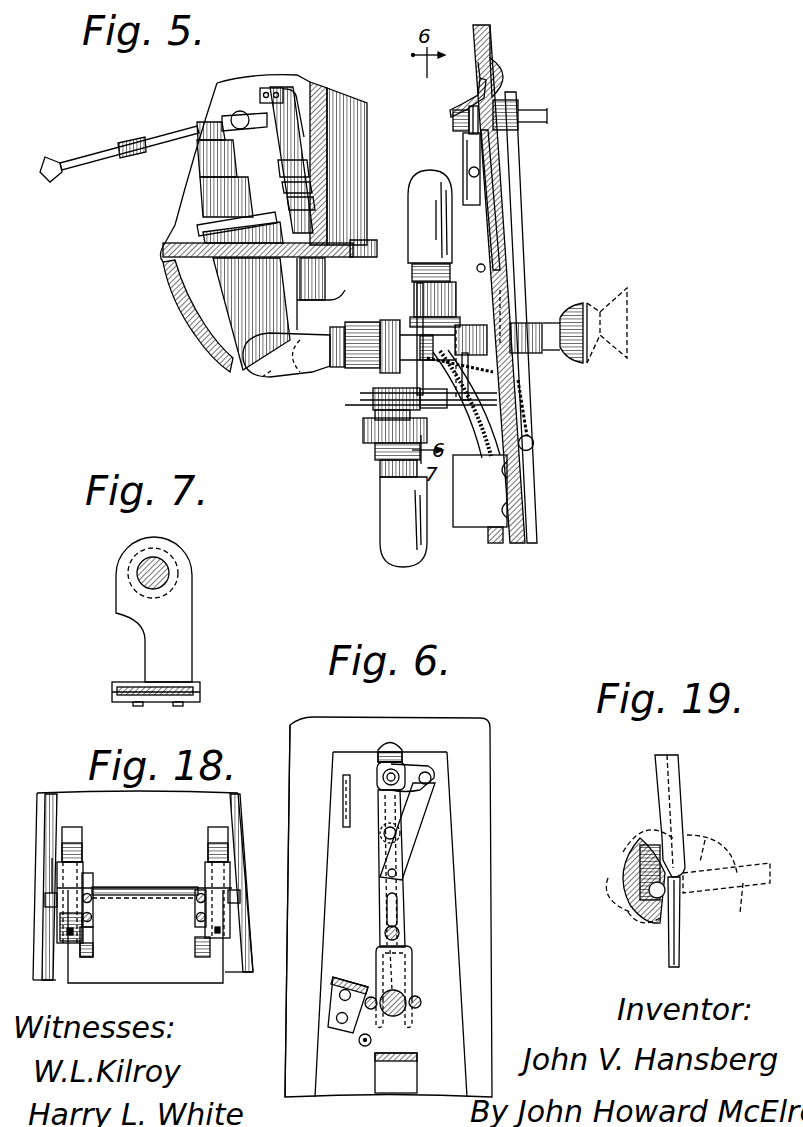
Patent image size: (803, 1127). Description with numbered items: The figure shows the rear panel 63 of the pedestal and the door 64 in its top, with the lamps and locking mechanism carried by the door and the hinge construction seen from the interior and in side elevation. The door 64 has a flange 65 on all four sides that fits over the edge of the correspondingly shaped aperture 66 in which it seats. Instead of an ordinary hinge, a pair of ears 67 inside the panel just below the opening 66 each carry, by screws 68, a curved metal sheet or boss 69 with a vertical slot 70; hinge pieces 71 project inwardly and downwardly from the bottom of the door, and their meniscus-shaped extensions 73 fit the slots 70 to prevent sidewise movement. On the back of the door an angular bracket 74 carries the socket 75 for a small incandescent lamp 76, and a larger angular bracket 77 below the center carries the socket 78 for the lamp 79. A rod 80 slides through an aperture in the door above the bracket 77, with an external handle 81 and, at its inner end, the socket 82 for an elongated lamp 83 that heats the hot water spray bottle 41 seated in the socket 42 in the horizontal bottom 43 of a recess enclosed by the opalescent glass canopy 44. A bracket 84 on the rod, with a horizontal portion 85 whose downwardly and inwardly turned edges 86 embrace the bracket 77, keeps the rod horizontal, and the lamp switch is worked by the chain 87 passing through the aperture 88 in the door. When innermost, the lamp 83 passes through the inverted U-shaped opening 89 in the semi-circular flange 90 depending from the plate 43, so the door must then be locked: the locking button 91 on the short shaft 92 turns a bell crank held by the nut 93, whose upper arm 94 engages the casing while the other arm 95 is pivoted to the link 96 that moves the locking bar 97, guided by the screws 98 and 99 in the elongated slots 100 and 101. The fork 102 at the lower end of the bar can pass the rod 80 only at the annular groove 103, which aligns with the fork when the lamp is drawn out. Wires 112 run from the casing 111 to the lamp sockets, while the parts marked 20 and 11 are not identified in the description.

In FIG. 5, the support plate 20 is at (485, 29).
In FIG. 6, the support plate 20 is at (472, 775).
In FIG. 19, the support plate 20 is at (679, 948).
In FIG. 5, the rear panel 63 is at (495, 57).
In FIG. 6, the rear panel 63 is at (292, 772).
In FIG. 5, the door 64 is at (517, 232).
In FIG. 18, the door 64 is at (70, 795).
In FIG. 6, the door 64 is at (391, 924).
In FIG. 19, the door 64 is at (678, 775).
In FIG. 5, the flange 65 is at (509, 72).
In FIG. 5, the aperture 66 is at (478, 70).
In FIG. 18, the ears 67 is at (93, 948).
In FIG. 19, the ears 67 is at (640, 915).
In FIG. 18, the screws 68 is at (92, 903).
In FIG. 19, the screws 68 is at (618, 894).
In FIG. 18, the curved metal sheet or boss 69 is at (67, 931).
In FIG. 19, the curved metal sheet or boss 69 is at (620, 874).
In FIG. 18, the vertical slot 70 is at (73, 898).
In FIG. 18, the hinge pieces 71 is at (70, 845).
In FIG. 19, the hinge pieces 71 is at (665, 845).
In FIG. 18, the meniscus-shaped extensions 73 is at (70, 940).
In FIG. 19, the meniscus-shaped extensions 73 is at (656, 845).
In FIG. 6, the angular bracket 74 is at (343, 977).
In FIG. 5, the socket 75 is at (414, 278).
In FIG. 5, the small incandescent lamp 76 is at (416, 220).
In FIG. 5, the larger angular bracket 77 is at (362, 398).
In FIG. 7, the larger angular bracket 77 is at (132, 688).
In FIG. 6, the larger angular bracket 77 is at (418, 1060).
In FIG. 5, the socket 78 is at (365, 440).
In FIG. 5, the incandescent lamp 79 is at (385, 527).
In FIG. 7, the incandescent lamp 79 is at (165, 572).
In FIG. 5, the rod 80 is at (525, 325).
In FIG. 6, the rod 80 is at (405, 994).
In FIG. 5, the external handle 81 is at (575, 305).
In FIG. 6, the external handle 81 is at (362, 1042).
In FIG. 5, the socket 82 is at (333, 368).
In FIG. 5, the elongated incandescent lamp 83 is at (266, 379).
In FIG. 5, the bracket 84 is at (387, 374).
In FIG. 7, the bracket 84 is at (178, 612).
In FIG. 5, the horizontal portion 85 is at (500, 400).
In FIG. 7, the horizontal portion 85 is at (160, 682).
In FIG. 5, the turned edges 86 is at (376, 416).
In FIG. 7, the turned edges 86 is at (176, 706).
In FIG. 5, the chain 87 is at (532, 420).
In FIG. 5, the aperture 88 is at (515, 380).
In FIG. 6, the aperture 88 is at (363, 1047).
In FIG. 5, the inverted U-shaped opening 89 is at (310, 303).
In FIG. 5, the flange 90 is at (327, 280).
In FIG. 5, the locking button 91 is at (540, 112).
In FIG. 6, the short shaft 92 is at (405, 765).
In FIG. 5, the nut 93 is at (454, 116).
In FIG. 6, the nut 93 is at (380, 768).
In FIG. 5, the upper arm 94 is at (470, 96).
In FIG. 6, the upper arm 94 is at (390, 740).
In FIG. 5, the arm 95 is at (470, 127).
In FIG. 6, the arm 95 is at (428, 770).
In FIG. 5, the link 96 is at (481, 160).
In FIG. 6, the link 96 is at (410, 820).
In FIG. 5, the locking bar 97 is at (492, 200).
In FIG. 6, the locking bar 97 is at (402, 900).
In FIG. 5, the screw 98 is at (470, 170).
In FIG. 6, the screw 98 is at (385, 836).
In FIG. 5, the screw 99 is at (479, 265).
In FIG. 6, the screw 99 is at (386, 930).
In FIG. 6, the elongated slot 100 is at (345, 800).
In FIG. 6, the elongated slot 101 is at (387, 900).
In FIG. 5, the fork 102 is at (503, 298).
In FIG. 6, the fork 102 is at (405, 958).
In FIG. 5, the annular groove 103 is at (376, 325).
In FIG. 5, the casing 111 is at (475, 528).
In FIG. 5, the wires 112 is at (468, 408).
In FIG. 5, the coupling 11 is at (466, 325).
In FIG. 5, the hot water spray bottle 41 is at (217, 292).
In FIG. 5, the socket 42 is at (200, 237).
In FIG. 5, the horizontal bottom 43 is at (165, 262).
In FIG. 5, the opalescent glass canopy 44 is at (323, 86).